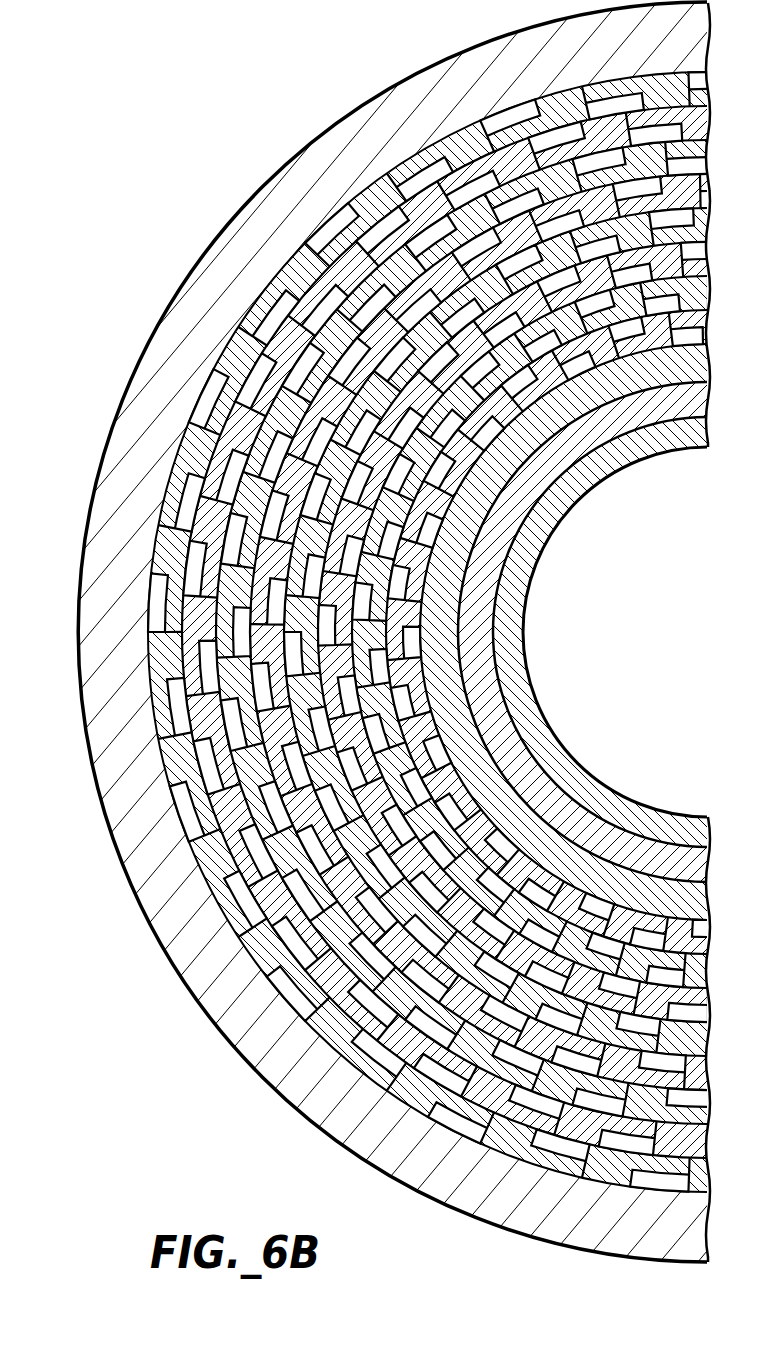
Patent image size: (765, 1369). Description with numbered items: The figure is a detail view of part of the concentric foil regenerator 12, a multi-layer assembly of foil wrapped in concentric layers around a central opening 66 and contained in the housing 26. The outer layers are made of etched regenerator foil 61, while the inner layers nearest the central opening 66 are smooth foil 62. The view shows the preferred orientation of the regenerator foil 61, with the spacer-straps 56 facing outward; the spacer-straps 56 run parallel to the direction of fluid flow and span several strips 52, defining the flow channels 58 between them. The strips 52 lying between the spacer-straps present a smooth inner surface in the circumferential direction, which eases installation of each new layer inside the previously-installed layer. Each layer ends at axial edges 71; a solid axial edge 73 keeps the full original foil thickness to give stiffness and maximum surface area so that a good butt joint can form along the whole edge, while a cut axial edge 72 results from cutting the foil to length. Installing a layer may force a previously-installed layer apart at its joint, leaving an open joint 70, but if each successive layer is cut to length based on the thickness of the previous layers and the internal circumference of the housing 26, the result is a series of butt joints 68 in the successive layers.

The concentric foil regenerator 12 is at (382, 684).
The housing 26 is at (282, 1097).
The strip 52 is at (177, 717).
The spacer-strap 56 is at (163, 550).
The flow channel 58 is at (367, 632).
The regenerator foil 61 is at (257, 938).
The smooth foil 62 is at (527, 655).
The central opening 66 is at (690, 638).
The butt joint 68 is at (545, 1125).
The open joint 70 is at (497, 683).
The axial edge 71 is at (253, 323).
The cut axial edge 72 is at (230, 333).
The solid axial edge 73 is at (282, 260).